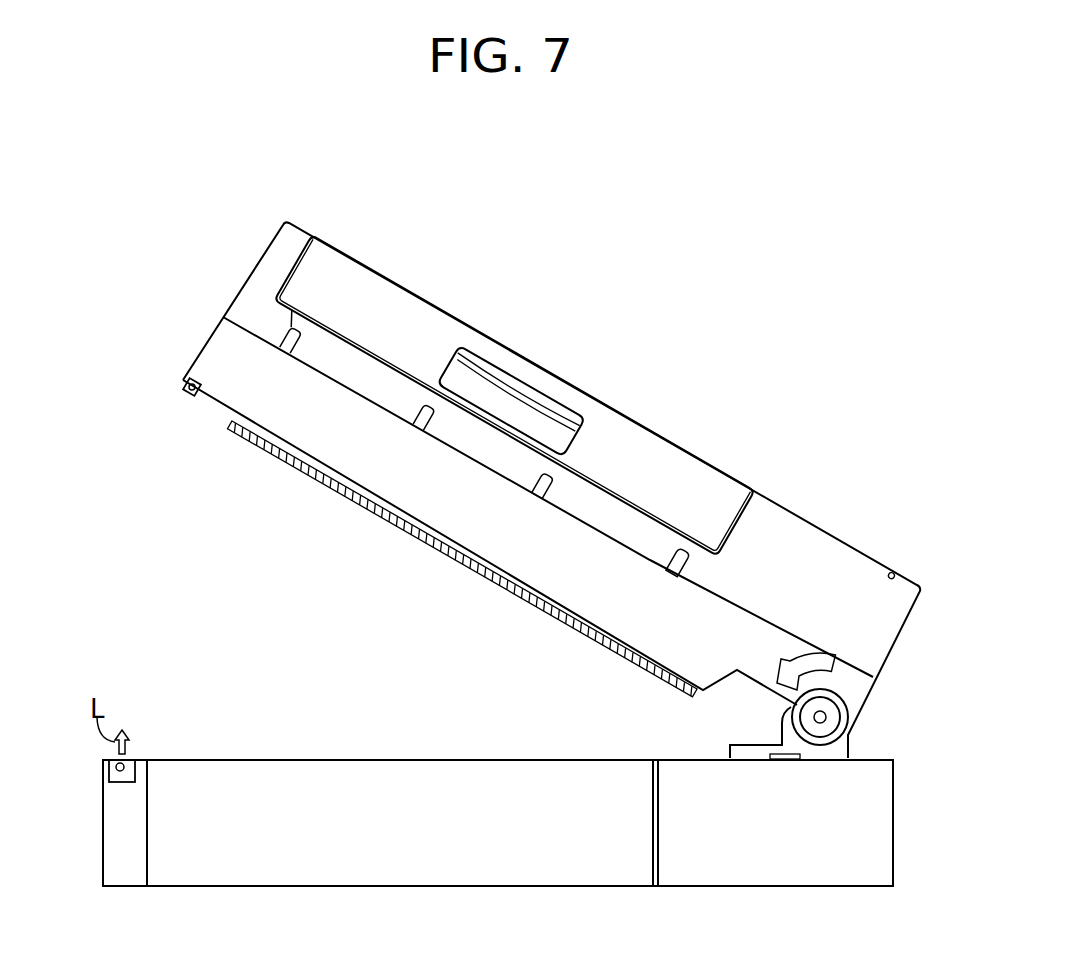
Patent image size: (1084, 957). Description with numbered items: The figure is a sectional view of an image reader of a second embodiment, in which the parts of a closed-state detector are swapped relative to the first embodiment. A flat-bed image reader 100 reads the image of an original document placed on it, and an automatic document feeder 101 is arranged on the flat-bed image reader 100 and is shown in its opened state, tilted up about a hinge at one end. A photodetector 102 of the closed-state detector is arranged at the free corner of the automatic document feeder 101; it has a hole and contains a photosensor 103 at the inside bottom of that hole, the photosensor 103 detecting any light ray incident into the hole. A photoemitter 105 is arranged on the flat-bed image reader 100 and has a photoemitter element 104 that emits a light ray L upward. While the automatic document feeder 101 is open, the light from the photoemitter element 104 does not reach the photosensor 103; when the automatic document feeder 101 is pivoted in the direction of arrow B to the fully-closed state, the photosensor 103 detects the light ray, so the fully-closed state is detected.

The flat-bed image reader 100 is at (893, 808).
The automatic document feeder 101 is at (638, 423).
The photodetector 102 is at (185, 393).
The photosensor 103 is at (182, 380).
The photoemitter element 104 is at (127, 769).
The photoemitter 105 is at (132, 760).